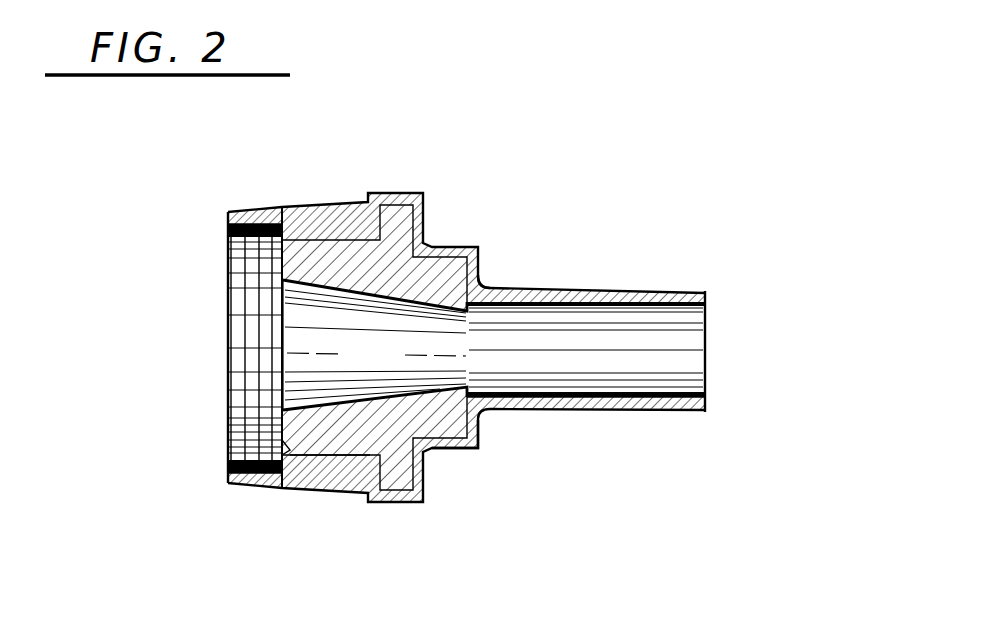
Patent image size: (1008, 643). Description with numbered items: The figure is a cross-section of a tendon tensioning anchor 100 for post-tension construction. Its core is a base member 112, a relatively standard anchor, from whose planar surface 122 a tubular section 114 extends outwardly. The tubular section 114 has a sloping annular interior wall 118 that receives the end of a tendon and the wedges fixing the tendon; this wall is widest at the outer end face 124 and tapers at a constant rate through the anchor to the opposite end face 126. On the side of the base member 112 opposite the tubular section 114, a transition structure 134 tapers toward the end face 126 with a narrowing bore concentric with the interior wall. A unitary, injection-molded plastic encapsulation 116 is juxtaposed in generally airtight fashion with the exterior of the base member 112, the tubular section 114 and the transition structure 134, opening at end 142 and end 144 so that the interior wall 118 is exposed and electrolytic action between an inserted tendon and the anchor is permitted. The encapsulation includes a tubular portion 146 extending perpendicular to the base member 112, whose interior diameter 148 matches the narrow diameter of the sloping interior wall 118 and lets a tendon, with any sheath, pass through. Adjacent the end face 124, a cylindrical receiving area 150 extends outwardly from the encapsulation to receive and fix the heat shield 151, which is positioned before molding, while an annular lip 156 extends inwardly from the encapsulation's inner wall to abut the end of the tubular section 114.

The tendon tensioning anchor 100 is at (605, 225).
The base member 112 is at (443, 255).
The tubular section 114 is at (333, 445).
The plastic encapsulation 116 is at (333, 204).
The sloping annular interior wall 118 is at (390, 360).
The planar surface 122 is at (357, 458).
The outer end face 124 is at (228, 427).
The end face 126 is at (482, 283).
The transition structure 134 is at (463, 453).
The end 142 is at (705, 373).
The end 144 is at (228, 338).
The tubular portion 146 is at (668, 292).
The interior diameter 148 is at (582, 308).
The receiving area 150 is at (230, 211).
The heat shield 151 is at (228, 252).
The annular lip 156 is at (278, 222).